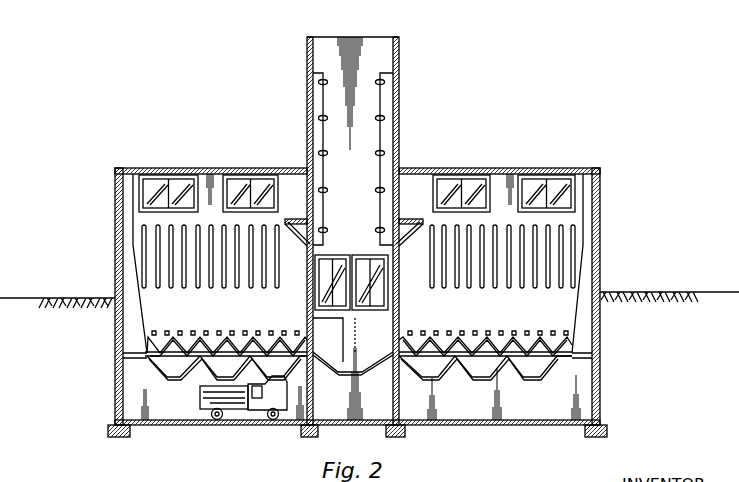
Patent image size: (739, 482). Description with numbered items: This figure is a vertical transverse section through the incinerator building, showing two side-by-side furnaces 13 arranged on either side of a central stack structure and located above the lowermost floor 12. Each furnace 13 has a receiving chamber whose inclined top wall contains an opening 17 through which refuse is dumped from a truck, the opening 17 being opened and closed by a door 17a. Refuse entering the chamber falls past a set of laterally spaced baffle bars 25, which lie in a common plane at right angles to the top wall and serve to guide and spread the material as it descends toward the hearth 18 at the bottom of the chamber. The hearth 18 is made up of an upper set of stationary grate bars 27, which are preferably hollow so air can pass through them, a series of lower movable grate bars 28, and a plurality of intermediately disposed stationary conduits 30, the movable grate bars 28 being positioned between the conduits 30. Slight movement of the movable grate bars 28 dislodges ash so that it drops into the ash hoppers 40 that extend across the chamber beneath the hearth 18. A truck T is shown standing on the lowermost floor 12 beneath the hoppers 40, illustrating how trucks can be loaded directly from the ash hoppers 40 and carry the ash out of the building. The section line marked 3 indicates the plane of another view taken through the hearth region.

The furnace 13 is at (133, 169).
The opening 17 is at (233, 185).
The door 17a is at (265, 185).
The baffle bars 25 is at (142, 237).
The stationary grate bars 27 is at (185, 333).
The stationary conduits 30 is at (207, 370).
The hearth 18 is at (242, 326).
The ash hoppers 40 is at (155, 368).
The movable grate bars 28 is at (210, 368).
The truck T is at (235, 409).
The lowermost floor 12 is at (464, 420).
The section line 3- 3 is at (60, 320).